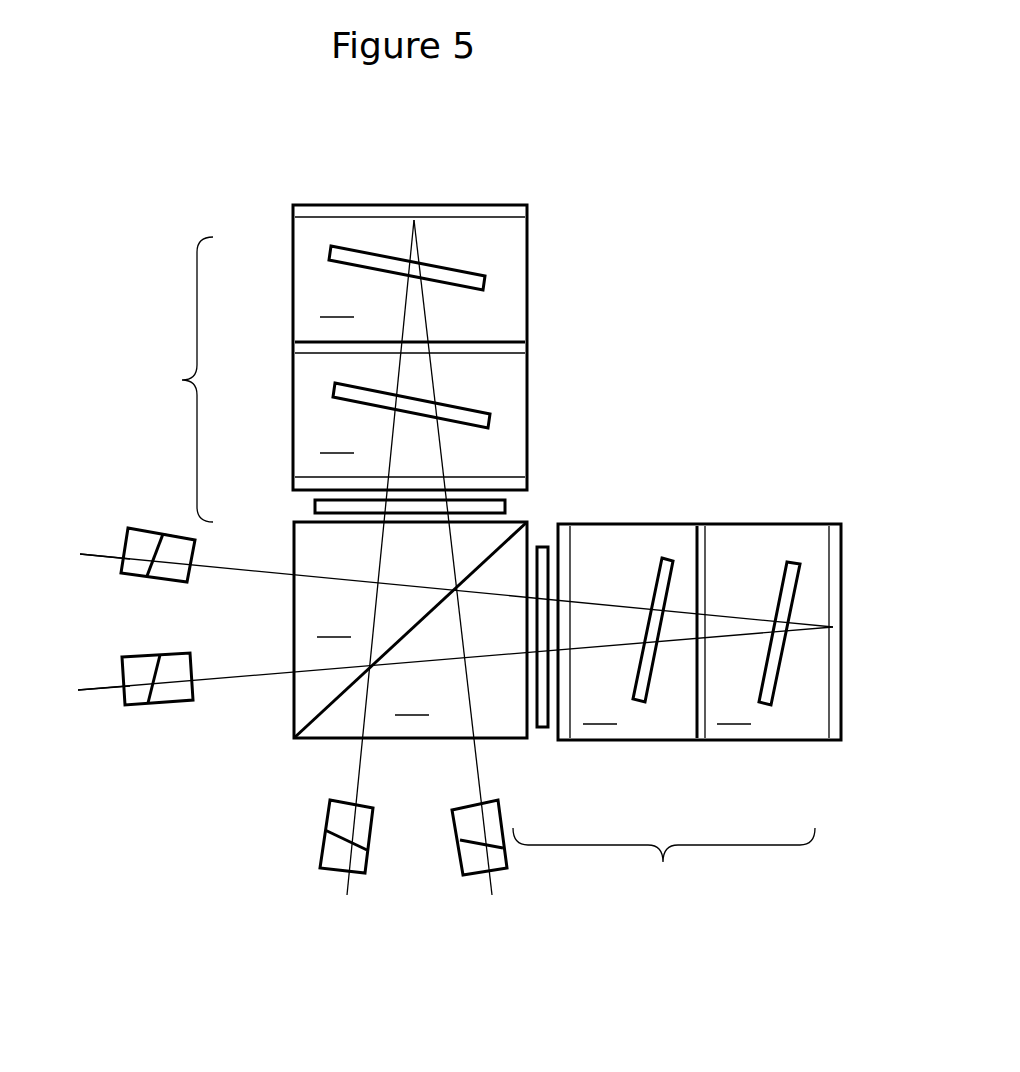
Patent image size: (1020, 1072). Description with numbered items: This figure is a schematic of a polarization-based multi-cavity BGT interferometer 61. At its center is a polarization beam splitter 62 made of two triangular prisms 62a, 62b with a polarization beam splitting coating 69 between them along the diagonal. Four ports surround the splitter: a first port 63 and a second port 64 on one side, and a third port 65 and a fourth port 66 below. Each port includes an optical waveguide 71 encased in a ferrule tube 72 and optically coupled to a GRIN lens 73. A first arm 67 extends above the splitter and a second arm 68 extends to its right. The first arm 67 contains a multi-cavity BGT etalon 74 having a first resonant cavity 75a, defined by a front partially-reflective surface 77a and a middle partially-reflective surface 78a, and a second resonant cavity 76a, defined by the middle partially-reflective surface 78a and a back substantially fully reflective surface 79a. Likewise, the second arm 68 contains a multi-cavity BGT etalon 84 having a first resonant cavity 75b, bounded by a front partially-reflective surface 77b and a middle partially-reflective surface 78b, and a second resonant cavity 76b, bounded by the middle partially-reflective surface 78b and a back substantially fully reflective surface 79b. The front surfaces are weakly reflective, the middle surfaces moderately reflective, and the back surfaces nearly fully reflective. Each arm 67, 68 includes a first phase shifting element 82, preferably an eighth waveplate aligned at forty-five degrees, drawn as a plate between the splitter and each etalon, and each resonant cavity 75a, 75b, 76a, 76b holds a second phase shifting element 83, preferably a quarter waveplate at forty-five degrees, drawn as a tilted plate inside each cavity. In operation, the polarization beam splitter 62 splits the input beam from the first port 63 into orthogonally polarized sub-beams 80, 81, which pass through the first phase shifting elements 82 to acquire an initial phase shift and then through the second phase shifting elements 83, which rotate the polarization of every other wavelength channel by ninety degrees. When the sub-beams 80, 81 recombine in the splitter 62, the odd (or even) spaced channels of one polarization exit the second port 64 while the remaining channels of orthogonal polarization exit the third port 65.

The interferometer 61 is at (675, 171).
The polarization beam splitter 62 is at (280, 722).
The triangular prism 62a is at (334, 626).
The triangular prism 62b is at (412, 704).
The first port 63 is at (130, 499).
The second port 64 is at (132, 749).
The third port 65 is at (279, 877).
The fourth port 66 is at (536, 893).
The first arm 67 is at (181, 379).
The second arm 68 is at (664, 866).
The polarization beam splitting coating 69 is at (318, 718).
The optical waveguide 71 is at (91, 558).
The ferrule tube 72 is at (137, 568).
The GRIN lens 73 is at (185, 580).
The multi-cavity BGT etalon 74 is at (270, 184).
The first resonant cavity 75a is at (337, 442).
The first resonant cavity 75b is at (600, 713).
The second resonant cavity 76a is at (337, 306).
The second resonant cavity 76b is at (734, 713).
The front partially-reflective surface 77a is at (527, 467).
The front partially-reflective surface 77b is at (562, 511).
The middle partially-reflective surface 78a is at (527, 348).
The middle partially-reflective surface 78b is at (700, 522).
The back substantially fully reflective surface 79a is at (503, 206).
The back substantially fully reflective surface 79b is at (840, 540).
The sub-beam 80 is at (447, 548).
The sub-beam 81 is at (503, 603).
The first phase shifting element 82 is at (313, 500).
The second phase shifting element 83 is at (792, 565).
The multi-cavity BGT etalon 84 is at (803, 786).